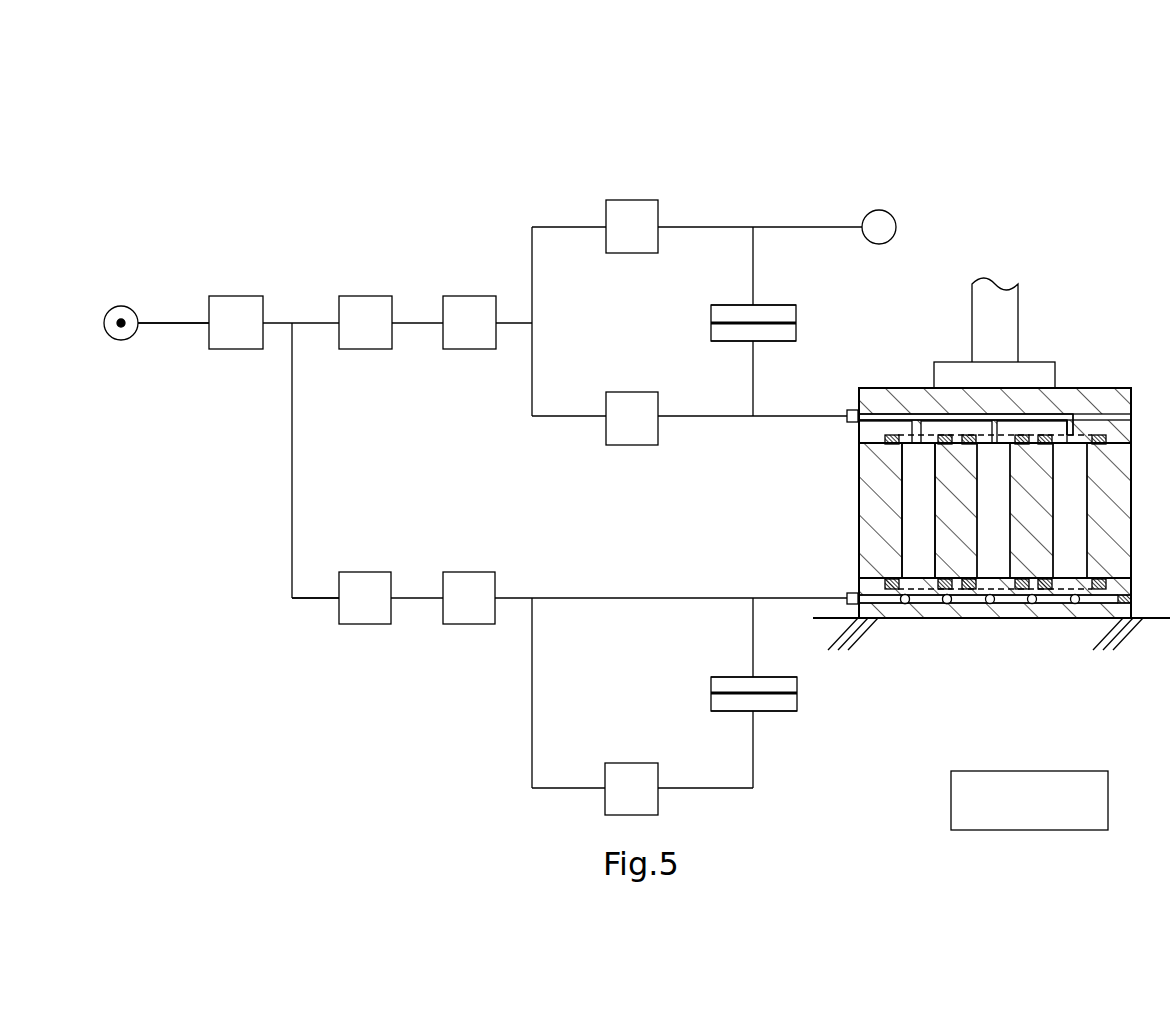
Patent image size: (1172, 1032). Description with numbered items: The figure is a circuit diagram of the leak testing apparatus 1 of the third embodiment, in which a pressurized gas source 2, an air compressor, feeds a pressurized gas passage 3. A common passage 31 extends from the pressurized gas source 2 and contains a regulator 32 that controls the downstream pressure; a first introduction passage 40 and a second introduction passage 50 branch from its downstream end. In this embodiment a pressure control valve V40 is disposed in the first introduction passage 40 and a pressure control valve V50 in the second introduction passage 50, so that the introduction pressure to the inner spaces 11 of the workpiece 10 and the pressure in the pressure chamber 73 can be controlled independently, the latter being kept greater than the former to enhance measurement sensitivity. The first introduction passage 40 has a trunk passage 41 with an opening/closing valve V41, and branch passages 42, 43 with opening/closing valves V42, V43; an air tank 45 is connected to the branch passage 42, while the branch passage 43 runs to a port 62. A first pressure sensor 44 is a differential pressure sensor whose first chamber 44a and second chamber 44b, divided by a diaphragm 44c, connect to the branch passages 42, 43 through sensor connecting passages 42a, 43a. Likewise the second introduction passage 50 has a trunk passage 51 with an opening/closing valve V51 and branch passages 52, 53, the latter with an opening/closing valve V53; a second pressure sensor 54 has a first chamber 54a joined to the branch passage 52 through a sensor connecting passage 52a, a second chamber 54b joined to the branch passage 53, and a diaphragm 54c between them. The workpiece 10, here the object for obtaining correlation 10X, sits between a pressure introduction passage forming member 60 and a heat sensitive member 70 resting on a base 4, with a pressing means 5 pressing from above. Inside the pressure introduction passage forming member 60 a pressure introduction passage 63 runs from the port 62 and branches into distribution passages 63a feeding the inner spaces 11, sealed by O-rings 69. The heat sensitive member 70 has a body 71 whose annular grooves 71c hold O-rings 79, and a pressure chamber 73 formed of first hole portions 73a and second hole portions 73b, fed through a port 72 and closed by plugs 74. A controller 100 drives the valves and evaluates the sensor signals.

The leak testing apparatus 1 is at (165, 253).
The pressurized gas source 2 is at (118, 306).
The pressurized gas passage 3 is at (240, 510).
The common passage 31 is at (165, 325).
The regulator 32 is at (232, 349).
The first introduction passage 40 is at (318, 317).
The pressure control valve V40 is at (365, 296).
The trunk passage 41 is at (410, 325).
The opening/closing valve V41 is at (470, 296).
The branch passage 42 is at (706, 227).
The opening/closing valve V42 is at (620, 200).
The sensor connecting passage 42a is at (753, 254).
The air tank 45 is at (890, 213).
The first pressure sensor 44 is at (722, 305).
The first chamber 44a is at (711, 332).
The second chamber 44b is at (711, 313).
The diaphragm 44c is at (775, 323).
The branch passage 43 is at (806, 416).
The sensor connecting passage 43a is at (753, 370).
The opening/closing valve V43 is at (620, 392).
The port 62 is at (852, 410).
The second introduction passage 50 is at (306, 607).
The pressure control valve V50 is at (363, 572).
The trunk passage 51 is at (408, 624).
The opening/closing valve V51 is at (465, 572).
The branch passage 52 is at (641, 598).
The sensor connecting passage 52a is at (753, 650).
The branch passage 53 is at (562, 788).
The opening/closing valve V53 is at (602, 808).
The second pressure sensor 54 is at (790, 711).
The first chamber 54a is at (711, 685).
The second chamber 54b is at (711, 703).
The diaphragm 54c is at (780, 693).
The workpiece 10 is at (858, 483).
The object for obtaining correlation 10X is at (995, 503).
The pressing means 5 is at (1020, 305).
The pressure introduction passage forming member 60 is at (1125, 388).
The pressure introduction passage 63 is at (900, 417).
The distribution passages 63a is at (1073, 425).
The O-rings 69 is at (1105, 437).
The inner spaces 11 is at (908, 537).
The port 72 is at (847, 597).
The plugs 74 is at (1131, 590).
The heat sensitive member 70 is at (969, 620).
The pressure chamber 73 is at (1002, 607).
The annular grooves 71c is at (1090, 590).
The body 71 is at (1040, 613).
The O-rings 79 is at (1018, 590).
The first hole portions 73a is at (905, 604).
The second hole portions 73b is at (947, 604).
The base 4 is at (1150, 618).
The controller 100 is at (1082, 771).